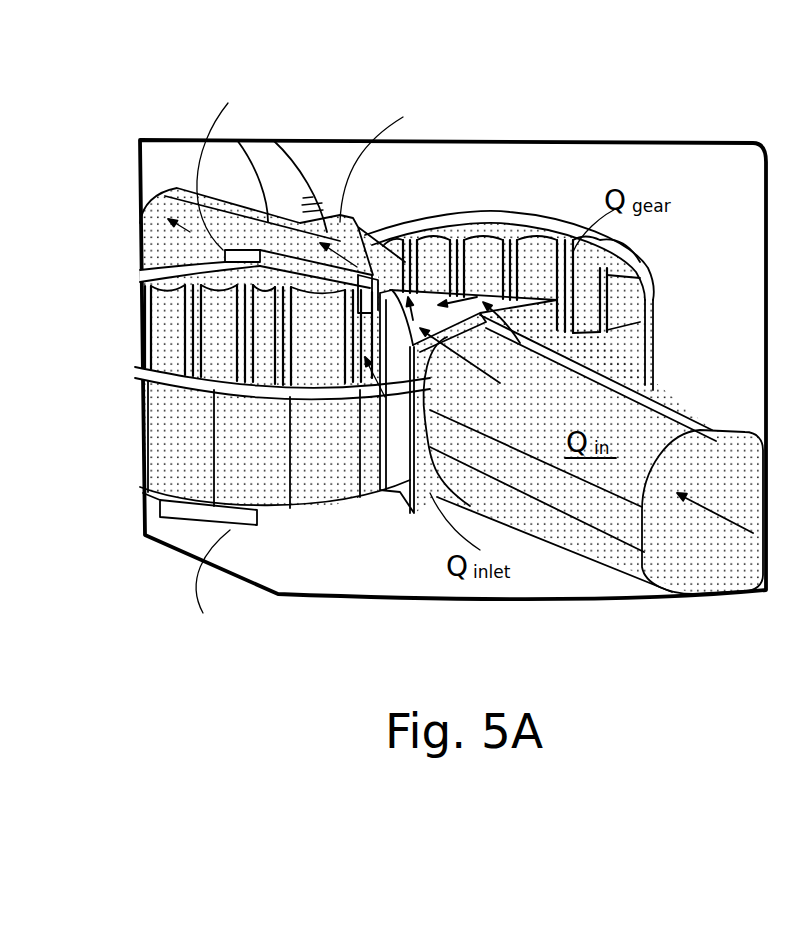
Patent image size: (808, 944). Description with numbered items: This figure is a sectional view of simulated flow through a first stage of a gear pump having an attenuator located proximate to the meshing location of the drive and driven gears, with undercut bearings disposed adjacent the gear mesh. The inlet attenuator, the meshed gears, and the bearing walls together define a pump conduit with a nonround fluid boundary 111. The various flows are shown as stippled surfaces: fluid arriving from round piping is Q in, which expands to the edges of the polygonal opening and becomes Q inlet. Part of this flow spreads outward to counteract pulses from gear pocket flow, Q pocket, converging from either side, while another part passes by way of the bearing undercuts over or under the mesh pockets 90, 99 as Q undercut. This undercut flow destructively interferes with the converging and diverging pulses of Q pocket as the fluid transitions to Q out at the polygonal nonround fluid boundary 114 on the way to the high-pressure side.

The polygonal nonround fluid boundary 114 is at (324, 222).
The mesh pocket 90 is at (282, 501).
The mesh pocket 99 is at (372, 495).
The nonround fluid boundary 111 is at (418, 497).